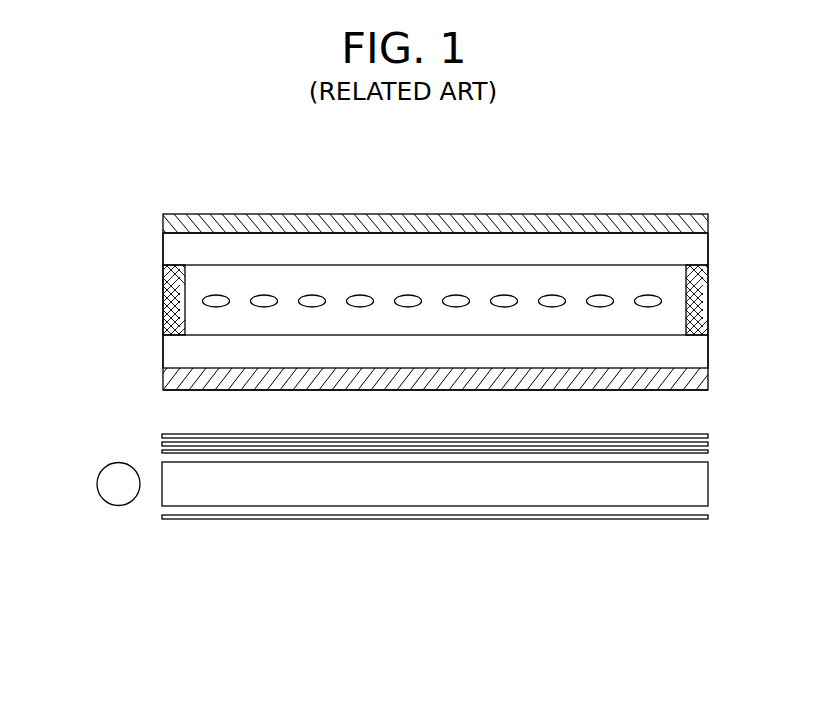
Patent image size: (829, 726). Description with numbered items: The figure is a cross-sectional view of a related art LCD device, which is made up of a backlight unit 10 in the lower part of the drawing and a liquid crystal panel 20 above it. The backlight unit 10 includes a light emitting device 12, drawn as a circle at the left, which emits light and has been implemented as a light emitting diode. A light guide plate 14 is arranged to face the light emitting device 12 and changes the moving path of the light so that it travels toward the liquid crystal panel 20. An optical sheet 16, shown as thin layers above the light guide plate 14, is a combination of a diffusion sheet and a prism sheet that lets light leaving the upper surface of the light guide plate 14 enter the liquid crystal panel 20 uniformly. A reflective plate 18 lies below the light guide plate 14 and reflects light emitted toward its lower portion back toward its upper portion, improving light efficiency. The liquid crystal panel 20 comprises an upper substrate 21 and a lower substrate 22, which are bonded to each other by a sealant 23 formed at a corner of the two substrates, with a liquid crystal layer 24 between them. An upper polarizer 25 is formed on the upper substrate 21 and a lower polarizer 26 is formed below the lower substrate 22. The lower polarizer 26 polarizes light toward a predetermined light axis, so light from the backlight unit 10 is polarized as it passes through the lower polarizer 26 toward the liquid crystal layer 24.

The backlight unit 10 is at (278, 578).
The light emitting device 12 is at (103, 503).
The light guide plate 14 is at (198, 483).
The optical sheet 16 is at (243, 444).
The reflective plate 18 is at (282, 517).
The liquid crystal panel 20 is at (102, 227).
The upper substrate 21 is at (183, 248).
The lower substrate 22 is at (180, 352).
The sealant 23 is at (173, 290).
The liquid crystal layer 24 is at (208, 306).
The upper polarizer 25 is at (182, 217).
The lower polarizer 26 is at (178, 380).